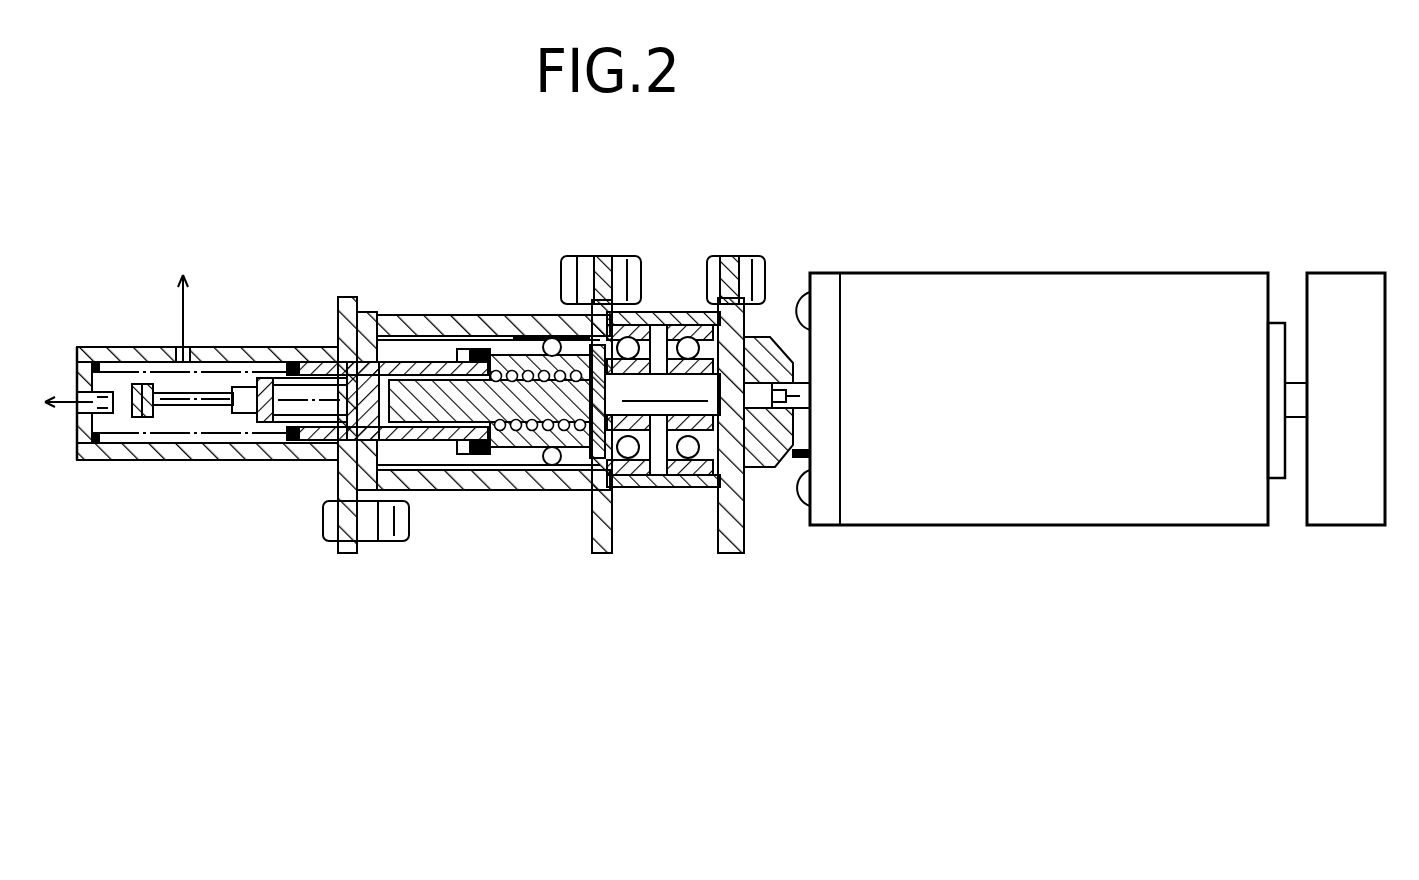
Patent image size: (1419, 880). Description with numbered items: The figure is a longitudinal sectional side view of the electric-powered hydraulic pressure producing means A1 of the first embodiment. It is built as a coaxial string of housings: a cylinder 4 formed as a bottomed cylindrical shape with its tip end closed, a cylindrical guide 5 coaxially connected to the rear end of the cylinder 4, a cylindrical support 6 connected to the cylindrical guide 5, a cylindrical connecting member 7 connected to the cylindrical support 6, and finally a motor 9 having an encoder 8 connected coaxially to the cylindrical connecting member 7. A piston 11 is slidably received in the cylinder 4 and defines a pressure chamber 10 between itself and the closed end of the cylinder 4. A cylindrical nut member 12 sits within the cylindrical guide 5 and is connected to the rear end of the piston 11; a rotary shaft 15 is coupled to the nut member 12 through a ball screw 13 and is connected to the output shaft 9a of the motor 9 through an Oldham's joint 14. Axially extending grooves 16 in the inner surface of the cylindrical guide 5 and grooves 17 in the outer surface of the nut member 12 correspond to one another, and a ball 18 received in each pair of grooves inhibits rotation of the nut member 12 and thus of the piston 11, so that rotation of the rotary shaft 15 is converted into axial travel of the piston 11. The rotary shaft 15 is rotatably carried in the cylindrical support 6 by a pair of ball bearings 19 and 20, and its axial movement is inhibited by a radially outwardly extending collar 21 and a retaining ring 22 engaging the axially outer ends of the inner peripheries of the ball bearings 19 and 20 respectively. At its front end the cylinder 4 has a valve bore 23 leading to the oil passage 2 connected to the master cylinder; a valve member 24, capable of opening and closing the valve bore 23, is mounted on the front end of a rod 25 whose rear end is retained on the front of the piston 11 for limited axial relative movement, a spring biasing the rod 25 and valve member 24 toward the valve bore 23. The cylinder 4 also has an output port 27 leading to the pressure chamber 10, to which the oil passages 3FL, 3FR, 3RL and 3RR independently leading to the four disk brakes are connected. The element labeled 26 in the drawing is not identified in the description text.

The electric-powered hydraulic pressure producing means A1 is at (708, 338).
The oil passage 2 is at (251, 376).
The oil passage 3FL is at (324, 292).
The oil passage 3FR is at (324, 292).
The oil passage 3RL is at (324, 292).
The oil passage 3RR is at (183, 300).
The cylinder 4 is at (258, 452).
The cylindrical guide 5 is at (450, 320).
The cylindrical support 6 is at (663, 396).
The cylindrical connecting member 7 is at (756, 335).
The encoder 8 is at (1325, 288).
The motor 9 is at (1065, 399).
The output shaft 9a is at (787, 394).
The pressure chamber 10 is at (197, 425).
The piston 11 is at (338, 347).
The nut member 12 is at (518, 352).
The ball screw 13 is at (518, 428).
The Oldham's joint 14 is at (746, 447).
The rotary shaft 15 is at (430, 400).
The groove 16 is at (412, 354).
The groove 17 is at (535, 452).
The ball 18 is at (550, 338).
The ball bearing 19 is at (633, 470).
The ball bearing 20 is at (690, 458).
The collar 21 is at (600, 440).
The retaining ring 22 is at (690, 357).
The valve bore 23 is at (80, 393).
The valve member 24 is at (135, 419).
The rod 25 is at (210, 393).
The rod 26 is at (287, 440).
The output port 27 is at (180, 350).